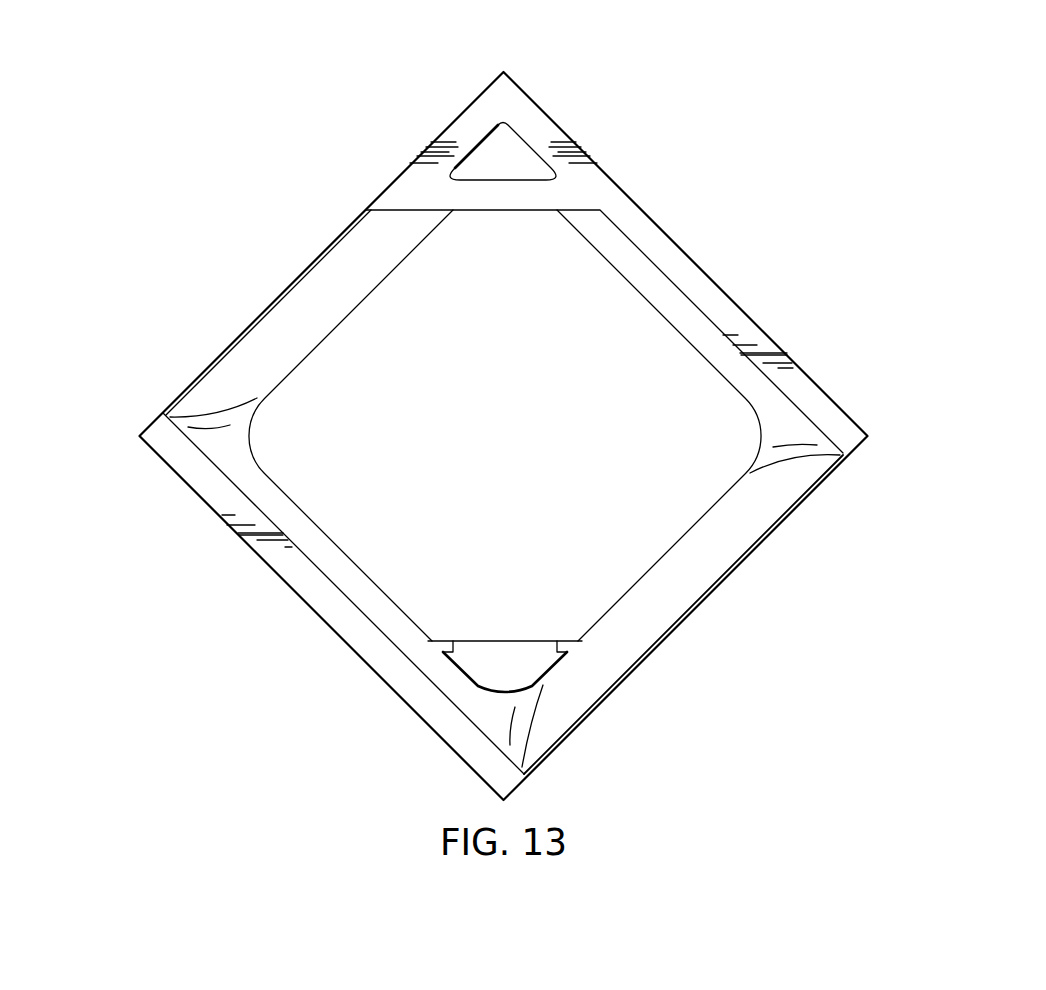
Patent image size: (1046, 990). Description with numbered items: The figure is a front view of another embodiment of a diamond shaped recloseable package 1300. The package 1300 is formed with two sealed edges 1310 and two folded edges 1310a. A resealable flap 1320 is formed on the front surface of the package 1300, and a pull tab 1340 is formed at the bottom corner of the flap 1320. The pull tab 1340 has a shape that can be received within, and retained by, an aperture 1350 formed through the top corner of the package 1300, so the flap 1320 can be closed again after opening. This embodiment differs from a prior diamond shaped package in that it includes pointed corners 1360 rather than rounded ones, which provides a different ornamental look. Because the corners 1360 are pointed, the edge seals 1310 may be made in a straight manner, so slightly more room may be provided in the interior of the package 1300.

The diamond shaped recloseable package 1300 is at (458, 405).
The sealed edges 1310 is at (685, 262).
The folded edges 1310a is at (265, 296).
The resealable flap 1320 is at (533, 440).
The pull tab 1340 is at (480, 687).
The aperture 1350 is at (502, 121).
The pointed corners 1360 is at (507, 68).